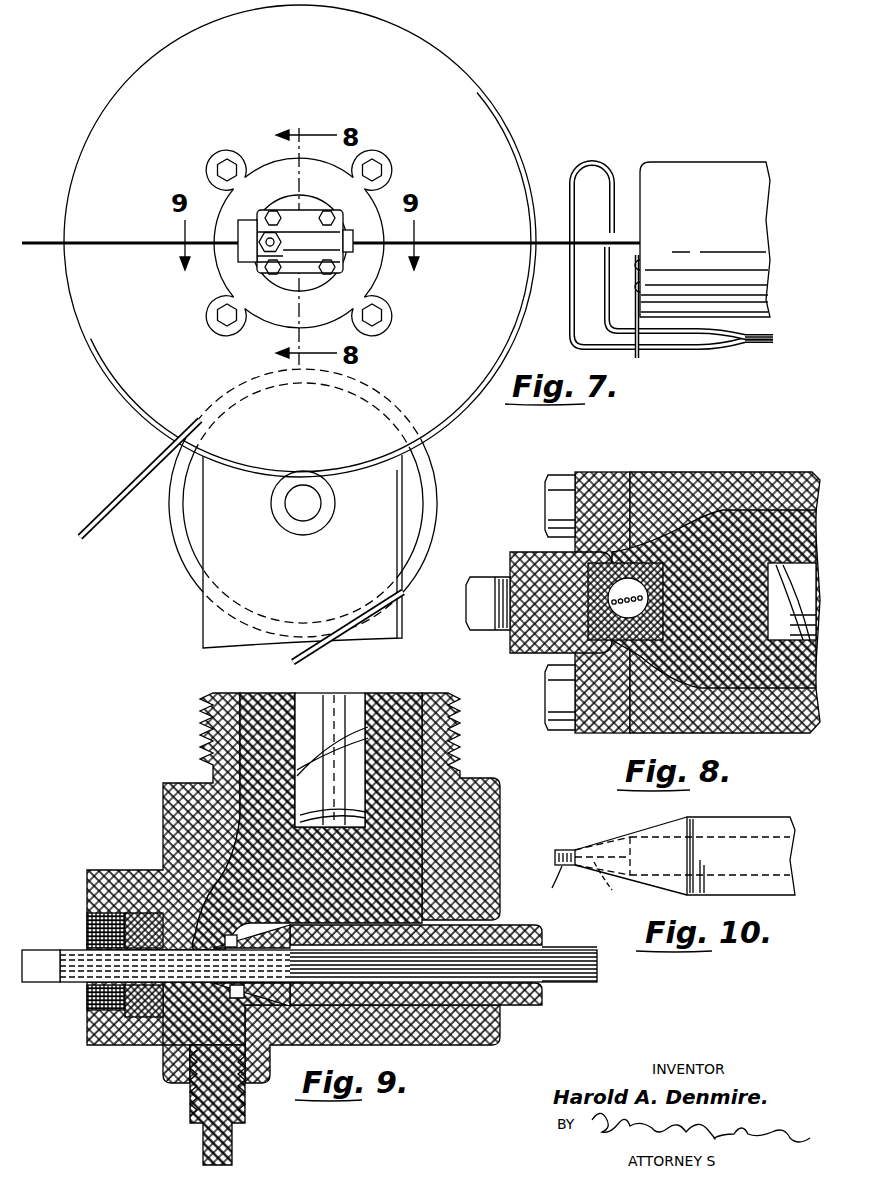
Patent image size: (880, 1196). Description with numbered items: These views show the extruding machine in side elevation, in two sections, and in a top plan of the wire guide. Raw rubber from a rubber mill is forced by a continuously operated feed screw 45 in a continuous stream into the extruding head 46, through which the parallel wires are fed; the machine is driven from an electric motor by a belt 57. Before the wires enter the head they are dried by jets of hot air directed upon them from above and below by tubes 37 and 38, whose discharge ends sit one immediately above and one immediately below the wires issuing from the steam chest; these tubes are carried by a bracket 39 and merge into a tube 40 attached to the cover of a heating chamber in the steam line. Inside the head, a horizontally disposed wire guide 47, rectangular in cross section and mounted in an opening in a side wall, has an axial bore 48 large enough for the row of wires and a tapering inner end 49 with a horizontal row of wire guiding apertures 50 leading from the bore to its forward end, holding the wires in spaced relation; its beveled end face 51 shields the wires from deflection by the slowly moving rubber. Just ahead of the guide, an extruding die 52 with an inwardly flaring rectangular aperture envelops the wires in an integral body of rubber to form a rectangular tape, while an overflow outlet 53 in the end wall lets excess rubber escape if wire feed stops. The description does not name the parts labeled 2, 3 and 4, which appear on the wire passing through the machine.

In FIG. 7, the wire 2 is at (97, 243).
In FIG. 9, the wire 2 is at (29, 950).
In FIG. 9, the wire bundle 3 is at (60, 950).
In FIG. 7, the wire 4 is at (457, 243).
In FIG. 9, the wire 4 is at (585, 949).
In FIG. 7, the tube 37 is at (620, 210).
In FIG. 7, the tube 38 is at (604, 270).
In FIG. 7, the bracket 39 is at (645, 354).
In FIG. 7, the tube 40 is at (752, 341).
In FIG. 8, the feed screw 45 is at (790, 630).
In FIG. 9, the feed screw 45 is at (360, 742).
In FIG. 7, the extruding head 46 is at (343, 263).
In FIG. 8, the extruding head 46 is at (730, 478).
In FIG. 9, the extruding head 46 is at (166, 822).
In FIG. 8, the wire guide 47 is at (588, 576).
In FIG. 9, the wire guide 47 is at (378, 945).
In FIG. 8, the axial bore 48 is at (650, 620).
In FIG. 9, the axial bore 48 is at (545, 985).
In FIG. 10, the axial bore 48 is at (796, 842).
In FIG. 9, the tapering inner end 49 is at (298, 946).
In FIG. 10, the tapering inner end 49 is at (640, 833).
In FIG. 8, the wire guiding apertures 50 is at (645, 598).
In FIG. 9, the wire guiding apertures 50 is at (258, 934).
In FIG. 10, the wire guiding apertures 50 is at (588, 886).
In FIG. 9, the end face 51 is at (238, 947).
In FIG. 10, the end face 51 is at (563, 850).
In FIG. 9, the extruding die 52 is at (126, 997).
In FIG. 9, the overflow outlet 53 is at (193, 1104).
In FIG. 7, the belt 57 is at (99, 517).